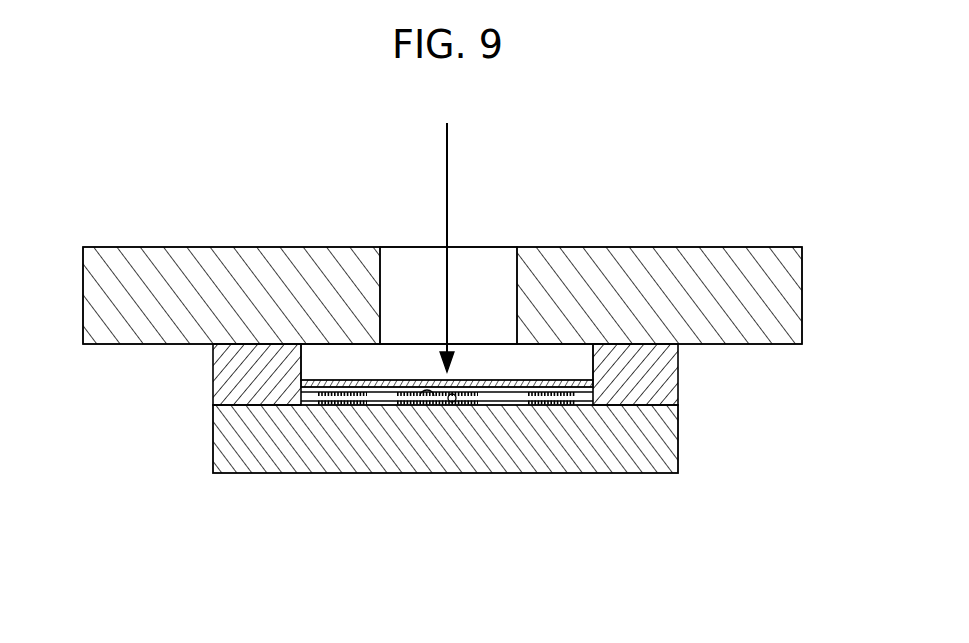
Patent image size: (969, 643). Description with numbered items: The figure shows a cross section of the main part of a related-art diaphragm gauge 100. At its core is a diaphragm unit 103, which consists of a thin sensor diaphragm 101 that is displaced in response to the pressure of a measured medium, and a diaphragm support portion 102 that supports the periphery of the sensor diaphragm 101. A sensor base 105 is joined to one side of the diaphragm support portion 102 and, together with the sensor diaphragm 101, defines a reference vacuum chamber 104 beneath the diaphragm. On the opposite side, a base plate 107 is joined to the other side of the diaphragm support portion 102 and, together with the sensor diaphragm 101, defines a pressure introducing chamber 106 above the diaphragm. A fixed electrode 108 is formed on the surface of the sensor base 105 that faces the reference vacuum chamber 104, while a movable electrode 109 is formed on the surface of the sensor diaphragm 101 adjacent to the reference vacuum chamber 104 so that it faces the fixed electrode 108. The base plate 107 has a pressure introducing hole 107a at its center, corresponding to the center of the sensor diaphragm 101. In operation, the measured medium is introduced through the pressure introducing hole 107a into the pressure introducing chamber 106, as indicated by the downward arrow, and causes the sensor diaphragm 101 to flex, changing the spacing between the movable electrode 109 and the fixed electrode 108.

The diaphragm gauge 100 is at (166, 171).
The sensor diaphragm 101 is at (500, 400).
The diaphragm support portion 102 is at (648, 377).
The diaphragm unit 103 is at (662, 557).
The reference vacuum chamber 104 is at (388, 400).
The sensor base 105 is at (232, 452).
The pressure introducing chamber 106 is at (363, 363).
The base plate 107 is at (732, 272).
The pressure introducing hole 107a is at (492, 280).
The fixed electrode 108 is at (450, 400).
The movable electrode 109 is at (418, 390).